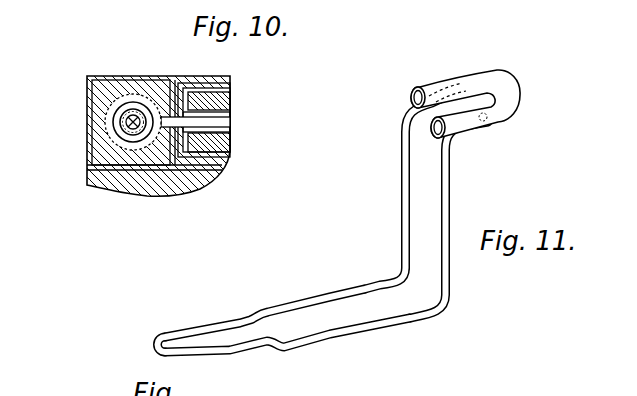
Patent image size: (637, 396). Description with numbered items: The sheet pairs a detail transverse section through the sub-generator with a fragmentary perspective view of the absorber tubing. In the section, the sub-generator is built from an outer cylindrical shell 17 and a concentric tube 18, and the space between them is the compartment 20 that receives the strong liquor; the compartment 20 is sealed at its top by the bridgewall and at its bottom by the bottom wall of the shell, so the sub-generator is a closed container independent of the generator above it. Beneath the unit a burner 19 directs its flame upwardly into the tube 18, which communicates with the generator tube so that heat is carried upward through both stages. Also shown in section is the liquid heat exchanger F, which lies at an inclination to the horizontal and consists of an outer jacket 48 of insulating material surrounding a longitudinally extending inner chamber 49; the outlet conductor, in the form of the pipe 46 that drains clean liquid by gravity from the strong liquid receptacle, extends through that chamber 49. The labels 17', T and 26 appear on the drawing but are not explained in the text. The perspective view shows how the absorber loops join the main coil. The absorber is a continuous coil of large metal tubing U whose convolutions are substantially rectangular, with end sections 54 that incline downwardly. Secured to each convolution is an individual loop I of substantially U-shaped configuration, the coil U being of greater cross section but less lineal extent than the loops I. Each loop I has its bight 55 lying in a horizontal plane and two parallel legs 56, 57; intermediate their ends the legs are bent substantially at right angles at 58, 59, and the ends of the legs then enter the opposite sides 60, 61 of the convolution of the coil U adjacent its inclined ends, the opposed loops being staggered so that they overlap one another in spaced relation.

In FIG. 10, the outer cylindrical shell 17 is at (184, 141).
In FIG. 10, the block outer wall 17' is at (132, 124).
In FIG. 10, the concentric tube 18 is at (118, 128).
In FIG. 10, the burner 19 is at (133, 118).
In FIG. 10, the compartment 20 is at (117, 137).
In FIG. 10, the tube passage T is at (101, 119).
In FIG. 10, the liquid heat exchanger F is at (197, 97).
In FIG. 10, the pipe 46 is at (212, 123).
In FIG. 10, the outer jacket 48 is at (216, 99).
In FIG. 10, the inner chamber 49 is at (213, 115).
In FIG. 11, the end sections 54 is at (514, 91).
In FIG. 11, the bight 55 is at (154, 343).
In FIG. 11, the leg 56 is at (337, 337).
In FIG. 11, the leg 57 is at (302, 301).
In FIG. 11, the right-angle bend 58 is at (401, 272).
In FIG. 11, the right-angle bend 59 is at (447, 302).
In FIG. 11, the side of convolution 60 is at (427, 90).
In FIG. 11, the side of convolution 61 is at (508, 115).
In FIG. 11, the loop I is at (450, 198).
In FIG. 11, the coil of tubing U is at (498, 86).
In FIG. 11, the partial numeral 26 is at (76, 388).